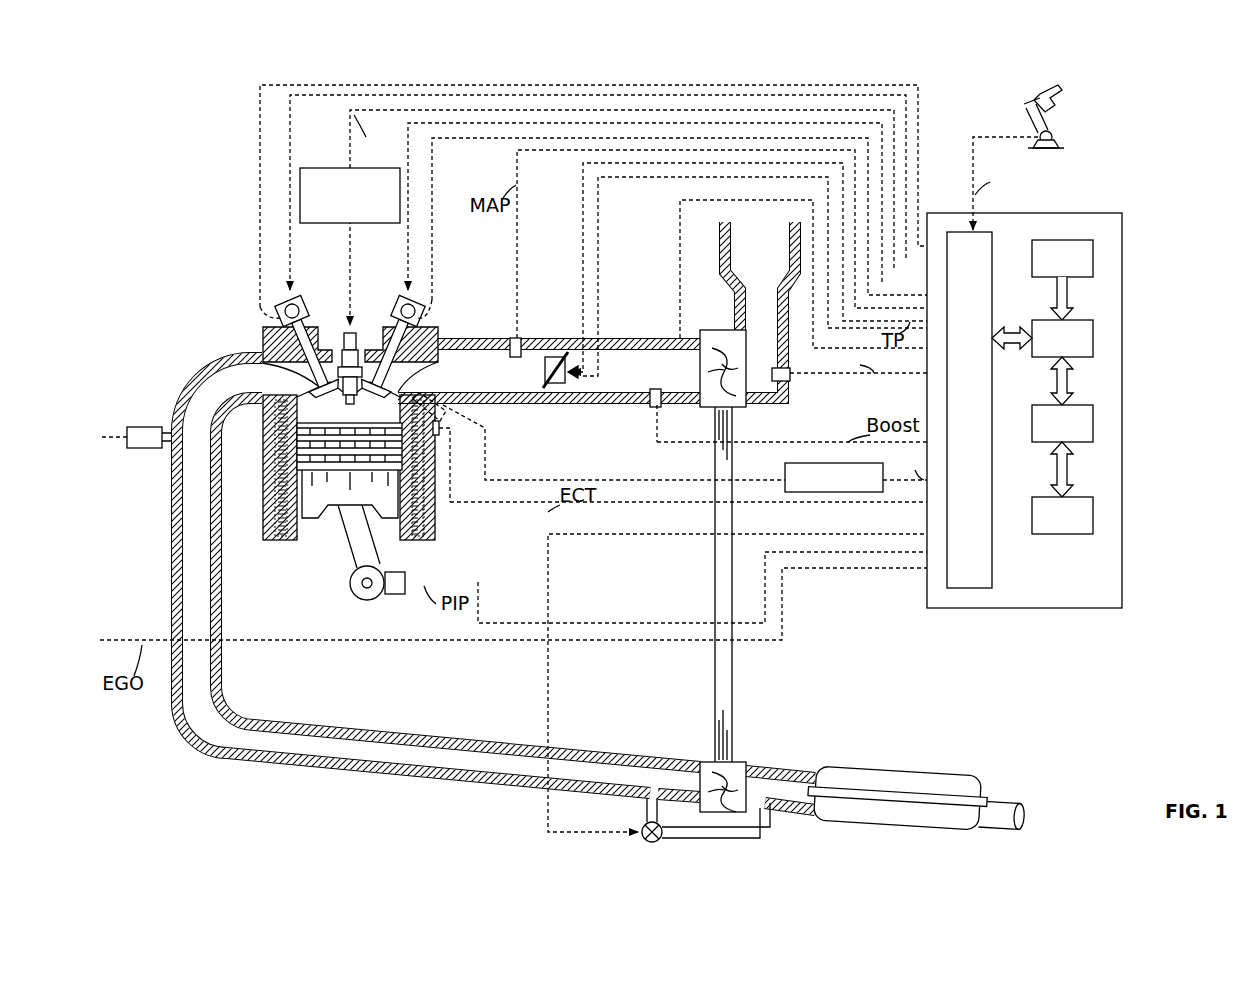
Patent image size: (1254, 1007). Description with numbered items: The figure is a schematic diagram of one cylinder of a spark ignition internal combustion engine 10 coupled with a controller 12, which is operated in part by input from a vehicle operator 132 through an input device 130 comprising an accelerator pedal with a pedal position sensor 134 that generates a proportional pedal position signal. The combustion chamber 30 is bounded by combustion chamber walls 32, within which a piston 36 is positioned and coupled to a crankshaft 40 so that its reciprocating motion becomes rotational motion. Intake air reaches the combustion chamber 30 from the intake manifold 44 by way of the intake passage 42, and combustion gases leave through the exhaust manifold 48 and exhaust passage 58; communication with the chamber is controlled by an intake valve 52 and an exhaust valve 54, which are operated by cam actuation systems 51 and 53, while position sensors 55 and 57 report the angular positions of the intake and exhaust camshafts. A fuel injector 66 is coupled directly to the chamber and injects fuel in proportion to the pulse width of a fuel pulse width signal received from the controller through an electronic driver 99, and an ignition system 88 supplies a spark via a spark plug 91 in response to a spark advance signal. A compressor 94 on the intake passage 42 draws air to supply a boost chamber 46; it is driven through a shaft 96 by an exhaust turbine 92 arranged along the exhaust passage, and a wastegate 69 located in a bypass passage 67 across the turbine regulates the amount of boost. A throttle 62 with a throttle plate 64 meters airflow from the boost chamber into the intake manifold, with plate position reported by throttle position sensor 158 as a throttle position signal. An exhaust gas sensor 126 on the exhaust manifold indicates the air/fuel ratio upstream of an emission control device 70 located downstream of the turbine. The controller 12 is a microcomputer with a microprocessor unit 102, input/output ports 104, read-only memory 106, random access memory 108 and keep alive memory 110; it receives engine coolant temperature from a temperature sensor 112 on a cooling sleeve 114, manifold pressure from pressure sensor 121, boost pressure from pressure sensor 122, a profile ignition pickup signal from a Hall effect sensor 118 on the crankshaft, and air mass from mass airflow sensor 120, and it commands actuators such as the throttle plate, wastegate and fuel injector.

The engine 10 is at (208, 287).
The controller 12 is at (1122, 220).
The combustion chamber 30 is at (347, 410).
The combustion chamber walls 32 is at (300, 542).
The piston 36 is at (337, 495).
The crankshaft 40 is at (355, 593).
The intake passage 42 is at (745, 260).
The intake manifold 44 is at (463, 385).
The boost chamber 46 is at (642, 377).
The exhaust manifold 48 is at (224, 388).
The cam actuation system 51 is at (404, 294).
The intake valve 52 is at (394, 382).
The cam actuation system 53 is at (296, 294).
The exhaust valve 54 is at (277, 377).
The position sensor 55 is at (424, 318).
The position sensor 57 is at (270, 316).
The exhaust passage 58 is at (430, 778).
The throttle 62 is at (551, 362).
The throttle plate 64 is at (560, 354).
The fuel injector 66 is at (438, 414).
The bypass passage 67 is at (772, 815).
The wastegate 69 is at (642, 829).
The emission control device 70 is at (960, 776).
The ignition system 88 is at (344, 168).
The spark plug 91 is at (353, 333).
The exhaust turbine 92 is at (706, 762).
The compressor 94 is at (732, 330).
The shaft 96 is at (734, 445).
The electronic driver 99 is at (877, 486).
The microprocessor unit 102 is at (1095, 336).
The input/output ports 104 is at (993, 240).
The read-only memory 106 is at (1095, 256).
The random access memory 108 is at (1095, 422).
The keep alive memory 110 is at (1095, 513).
The temperature sensor 112 is at (442, 436).
The cooling sleeve 114 is at (428, 532).
The Hall effect sensor 118 is at (395, 595).
The mass airflow sensor 120 is at (792, 380).
The pressure sensor 121 is at (512, 336).
The pressure sensor 122 is at (652, 408).
The exhaust gas sensor 126 is at (148, 427).
The input device 130 is at (1028, 120).
The vehicle operator 132 is at (1066, 104).
The pedal position sensor 134 is at (1062, 146).
The throttle position sensor 158 is at (575, 380).